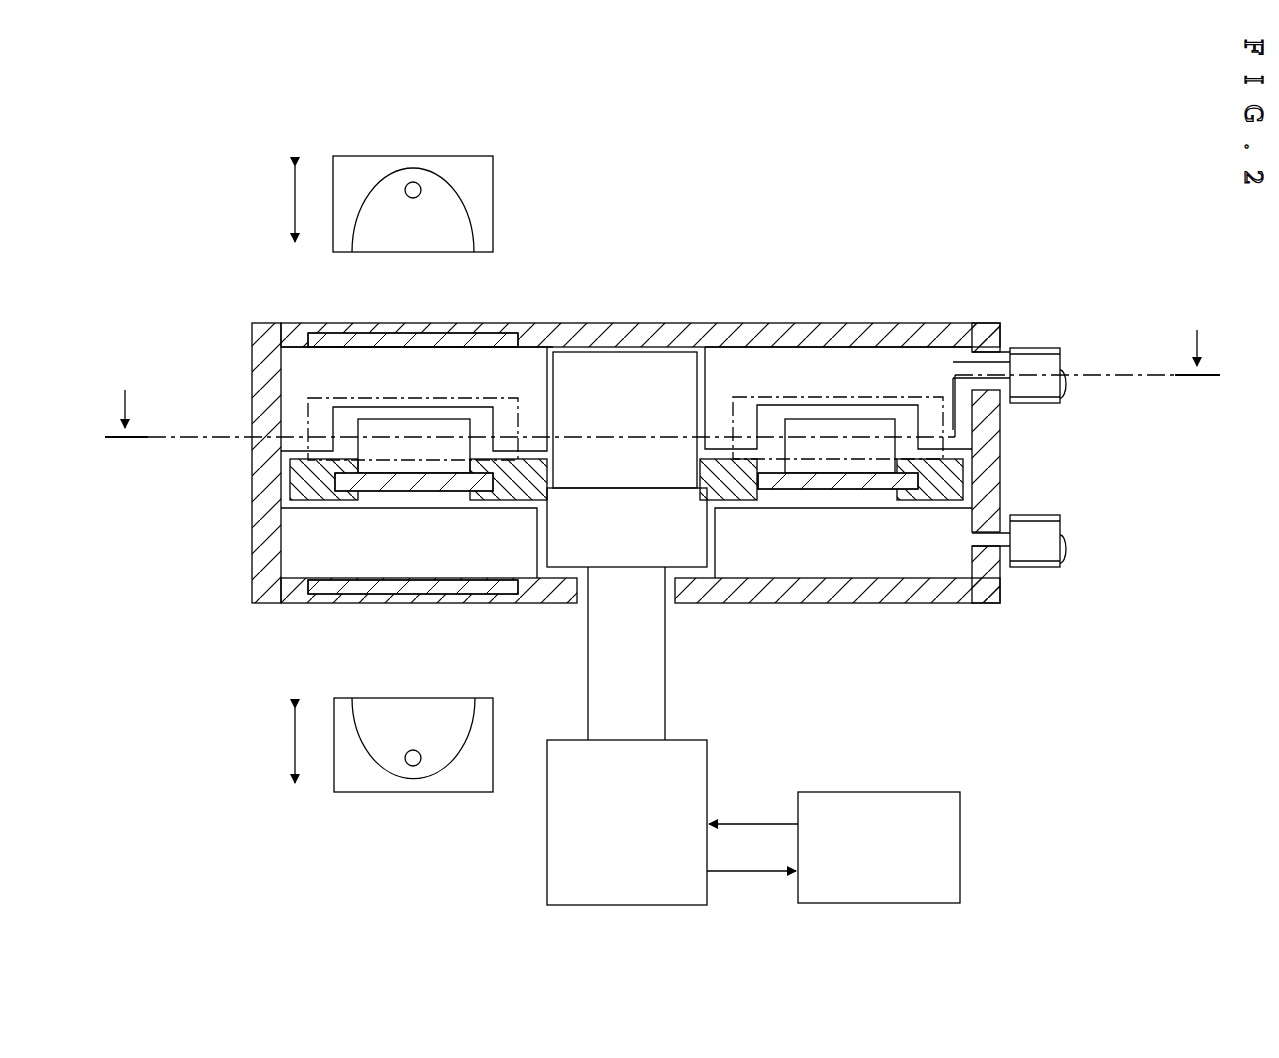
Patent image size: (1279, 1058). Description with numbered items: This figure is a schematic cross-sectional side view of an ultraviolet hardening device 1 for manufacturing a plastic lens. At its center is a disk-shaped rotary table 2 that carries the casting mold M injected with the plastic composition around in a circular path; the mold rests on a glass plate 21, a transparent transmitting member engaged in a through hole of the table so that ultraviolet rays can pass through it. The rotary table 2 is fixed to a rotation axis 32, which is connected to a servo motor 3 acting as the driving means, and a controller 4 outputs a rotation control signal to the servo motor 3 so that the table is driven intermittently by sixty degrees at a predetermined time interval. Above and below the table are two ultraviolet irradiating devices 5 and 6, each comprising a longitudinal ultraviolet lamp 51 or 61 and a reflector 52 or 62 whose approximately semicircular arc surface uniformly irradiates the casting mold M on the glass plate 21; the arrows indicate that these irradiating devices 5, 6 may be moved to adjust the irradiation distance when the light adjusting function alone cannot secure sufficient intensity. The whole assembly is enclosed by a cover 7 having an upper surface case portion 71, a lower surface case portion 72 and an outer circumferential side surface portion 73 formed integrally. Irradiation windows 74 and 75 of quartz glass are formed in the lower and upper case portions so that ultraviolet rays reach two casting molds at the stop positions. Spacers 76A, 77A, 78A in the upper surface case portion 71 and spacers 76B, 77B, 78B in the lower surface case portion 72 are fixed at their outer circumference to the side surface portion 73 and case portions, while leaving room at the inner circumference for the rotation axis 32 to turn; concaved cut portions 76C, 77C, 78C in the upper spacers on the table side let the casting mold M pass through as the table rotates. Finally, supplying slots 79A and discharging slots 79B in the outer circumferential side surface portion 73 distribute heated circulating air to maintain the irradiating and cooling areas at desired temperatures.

The ultraviolet hardening device 1 is at (1045, 200).
The rotary table 2 is at (300, 478).
The glass plate 21 is at (333, 490).
The servo motor 3 is at (707, 760).
The controller 4 is at (960, 843).
The ultraviolet irradiating device 5 is at (358, 172).
The ultraviolet lamp 51 is at (413, 182).
The reflector 52 is at (462, 195).
The ultraviolet irradiating device 6 is at (360, 775).
The ultraviolet lamp 61 is at (413, 768).
The reflector 62 is at (462, 752).
The cover 7 is at (265, 394).
The upper surface case portion 71 is at (640, 347).
The lower surface case portion 72 is at (543, 583).
The outer circumferential side surface portion 73 is at (993, 448).
The irradiation window 74 is at (408, 585).
The irradiation window 75 is at (427, 340).
The spacer 76A is at (292, 358).
The spacer 76B is at (297, 573).
The concaved cut portion 76C is at (485, 410).
The spacer 77A is at (868, 367).
The spacer 77B is at (875, 560).
The concaved cut portion 77C is at (908, 395).
The spacer 78A is at (838, 292).
The spacer 78B is at (843, 609).
The concaved cut portion 78C is at (854, 348).
The supplying slot 79A is at (1027, 372).
The discharging slot 79B is at (1010, 542).
The rotation axis 32 is at (680, 372).
The casting mold M is at (805, 428).